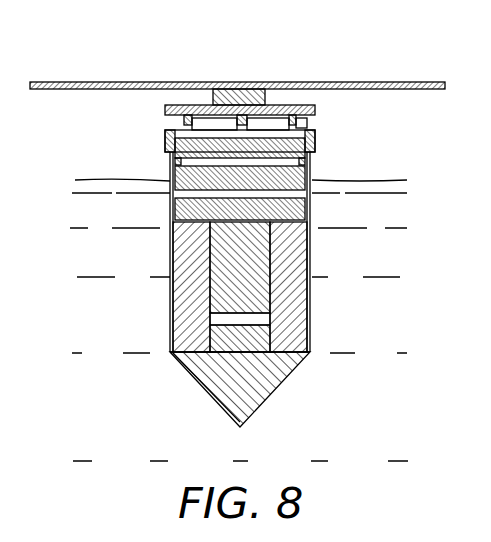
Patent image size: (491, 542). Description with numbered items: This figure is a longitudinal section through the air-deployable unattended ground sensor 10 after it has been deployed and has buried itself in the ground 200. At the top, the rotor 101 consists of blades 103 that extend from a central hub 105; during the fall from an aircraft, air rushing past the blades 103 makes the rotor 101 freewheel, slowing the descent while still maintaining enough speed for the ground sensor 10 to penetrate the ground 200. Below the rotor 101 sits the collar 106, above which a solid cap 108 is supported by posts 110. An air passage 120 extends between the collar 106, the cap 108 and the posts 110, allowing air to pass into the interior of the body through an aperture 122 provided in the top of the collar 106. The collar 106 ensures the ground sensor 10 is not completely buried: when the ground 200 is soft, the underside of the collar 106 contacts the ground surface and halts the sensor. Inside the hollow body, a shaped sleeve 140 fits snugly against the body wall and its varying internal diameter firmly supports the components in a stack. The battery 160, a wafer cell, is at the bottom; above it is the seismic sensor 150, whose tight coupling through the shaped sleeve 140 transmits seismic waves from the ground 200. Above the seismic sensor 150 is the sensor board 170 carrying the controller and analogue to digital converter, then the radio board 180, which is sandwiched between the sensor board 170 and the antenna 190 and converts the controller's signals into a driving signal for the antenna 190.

The ground sensor 10 is at (100, 404).
The rotor 101 is at (394, 60).
The blades 103 is at (60, 82).
The central hub 105 is at (240, 88).
The collar 106 is at (165, 136).
The cap 108 is at (165, 109).
The posts 110 is at (307, 122).
The air passage 120 is at (184, 121).
The aperture 122 is at (273, 130).
The shaped sleeve 140 is at (300, 292).
The seismic sensor 150 is at (270, 245).
The battery 160 is at (270, 330).
The sensor board 170 is at (312, 203).
The radio board 180 is at (175, 180).
The antenna 190 is at (312, 152).
The ground 200 is at (392, 183).